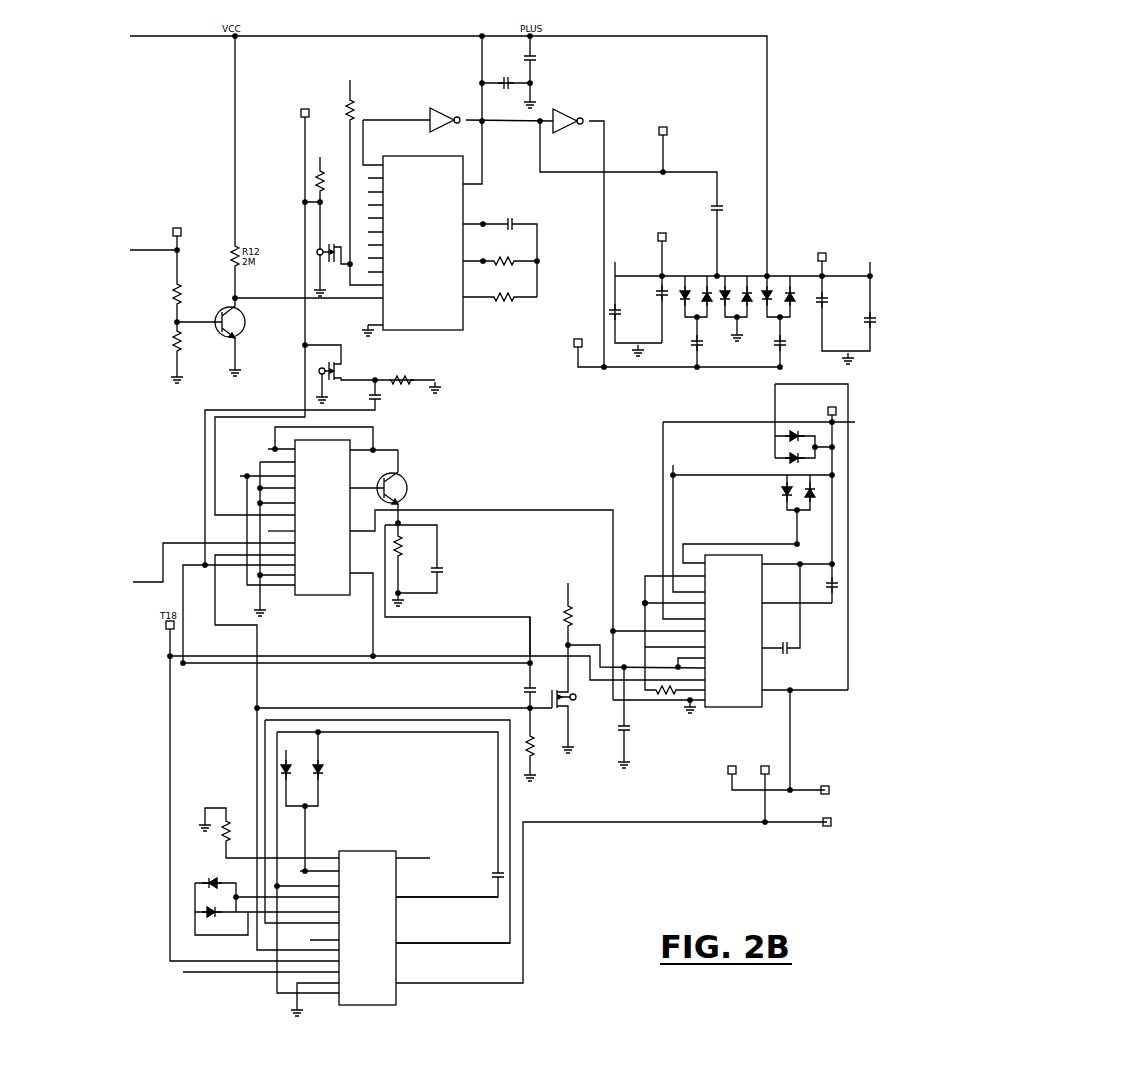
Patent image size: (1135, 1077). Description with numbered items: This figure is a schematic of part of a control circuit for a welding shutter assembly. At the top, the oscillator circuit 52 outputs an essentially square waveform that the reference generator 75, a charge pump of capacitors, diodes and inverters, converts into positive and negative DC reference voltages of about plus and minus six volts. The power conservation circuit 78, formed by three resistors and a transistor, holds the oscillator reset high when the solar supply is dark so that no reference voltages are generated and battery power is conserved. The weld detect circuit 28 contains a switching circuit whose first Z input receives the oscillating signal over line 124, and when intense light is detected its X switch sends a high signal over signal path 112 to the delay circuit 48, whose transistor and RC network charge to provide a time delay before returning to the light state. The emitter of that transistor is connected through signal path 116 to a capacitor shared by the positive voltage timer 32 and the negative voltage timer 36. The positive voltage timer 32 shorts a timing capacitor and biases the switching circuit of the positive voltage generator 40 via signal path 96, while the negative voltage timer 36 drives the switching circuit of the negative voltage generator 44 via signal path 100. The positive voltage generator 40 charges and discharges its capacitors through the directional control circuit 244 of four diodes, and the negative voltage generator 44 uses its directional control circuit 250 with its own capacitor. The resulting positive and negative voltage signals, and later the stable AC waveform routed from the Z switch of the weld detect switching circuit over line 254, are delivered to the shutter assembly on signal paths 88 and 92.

The oscillator circuit 52 is at (390, 100).
The reference generator 75 is at (808, 116).
The power conservation circuit 78 is at (165, 313).
The weld detect circuit 28 is at (182, 418).
The line 124 is at (205, 490).
The signal path 112 is at (376, 485).
The delay circuit 48 is at (450, 472).
The positive voltage generator 40 is at (850, 478).
The directional control circuit 244 is at (740, 497).
The signal path 116 is at (470, 617).
The signal path 96 is at (597, 640).
The line 254 is at (373, 620).
The signal path 88 is at (790, 745).
The signal path 100 is at (257, 768).
The directional control circuit 250 is at (404, 767).
The negative voltage timer 36 is at (556, 768).
The positive voltage timer 32 is at (638, 766).
The signal path 92 is at (620, 822).
The negative voltage generator 44 is at (210, 986).